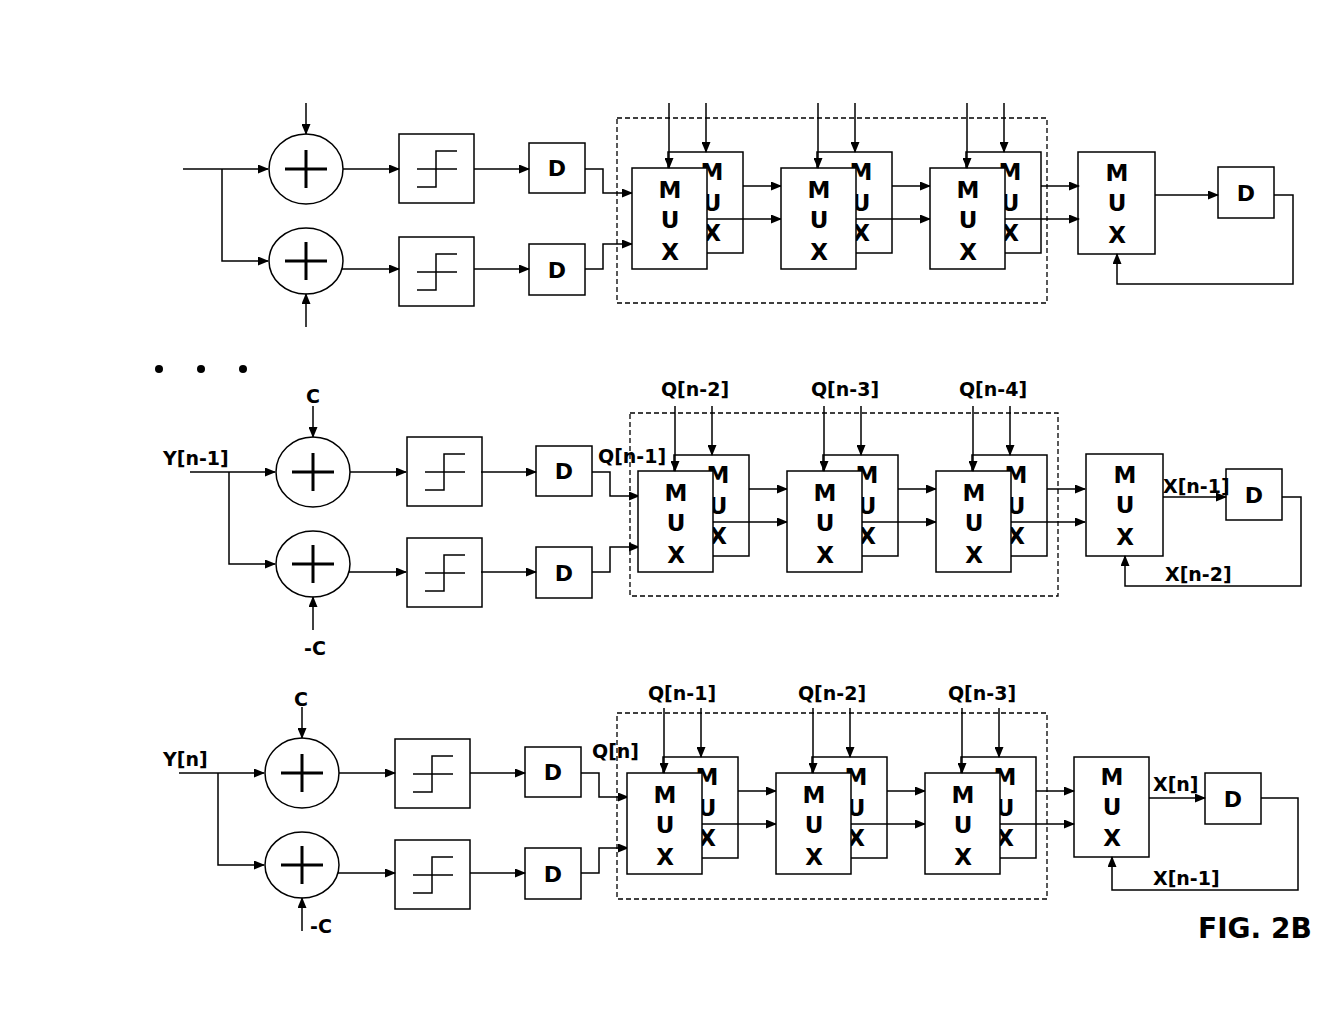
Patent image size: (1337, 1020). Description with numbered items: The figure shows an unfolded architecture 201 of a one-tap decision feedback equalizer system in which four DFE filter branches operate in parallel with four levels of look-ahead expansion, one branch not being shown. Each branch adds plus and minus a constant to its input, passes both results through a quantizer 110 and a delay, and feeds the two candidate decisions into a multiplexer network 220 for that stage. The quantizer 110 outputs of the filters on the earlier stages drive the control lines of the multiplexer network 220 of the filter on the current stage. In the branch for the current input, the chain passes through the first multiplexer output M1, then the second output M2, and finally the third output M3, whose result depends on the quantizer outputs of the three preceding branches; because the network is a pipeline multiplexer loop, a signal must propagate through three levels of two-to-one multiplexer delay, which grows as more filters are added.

The unfolded architecture 201 is at (214, 106).
The quantizer 110 is at (460, 148).
The multiplexer (MUX) network 220 is at (1047, 720).
The first MUX network output M1 is at (752, 832).
The second MUX network output M2 is at (906, 833).
The third MUX network output M3 is at (1055, 842).